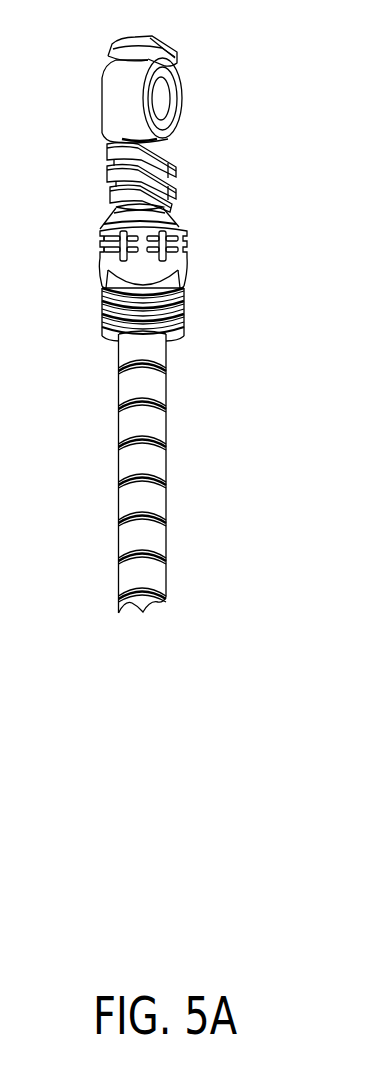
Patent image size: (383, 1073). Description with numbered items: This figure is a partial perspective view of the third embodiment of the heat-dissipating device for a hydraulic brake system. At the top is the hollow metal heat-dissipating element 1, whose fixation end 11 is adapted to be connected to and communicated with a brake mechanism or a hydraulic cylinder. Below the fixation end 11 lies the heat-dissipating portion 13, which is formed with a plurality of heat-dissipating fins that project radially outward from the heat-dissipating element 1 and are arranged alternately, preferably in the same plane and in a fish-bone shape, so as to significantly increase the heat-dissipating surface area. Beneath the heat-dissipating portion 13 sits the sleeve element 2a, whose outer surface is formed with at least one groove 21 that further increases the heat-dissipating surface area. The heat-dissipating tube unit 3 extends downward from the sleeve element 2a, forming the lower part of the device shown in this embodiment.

The heat-dissipating element 1 is at (161, 324).
The fixation end 11 is at (167, 98).
The heat-dissipating portion 13 is at (181, 194).
The groove 21 is at (186, 236).
The sleeve element 2a is at (182, 277).
The heat-dissipating tube unit 3 is at (124, 463).